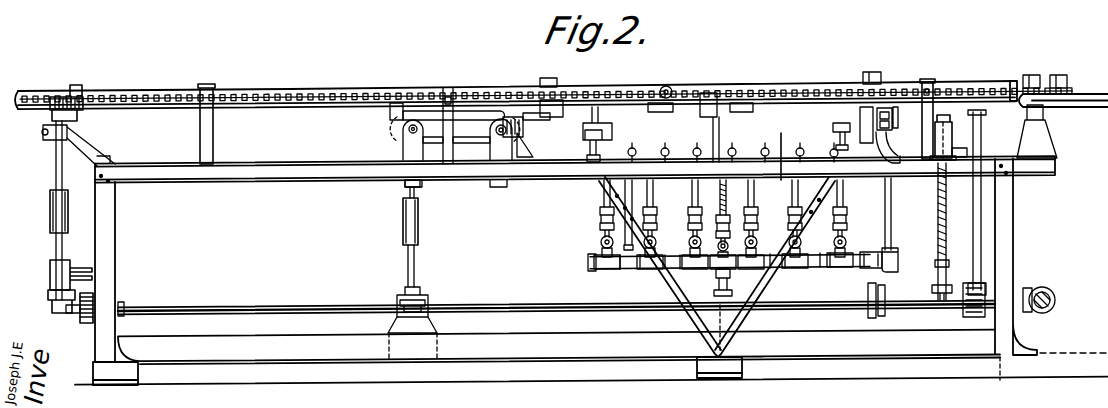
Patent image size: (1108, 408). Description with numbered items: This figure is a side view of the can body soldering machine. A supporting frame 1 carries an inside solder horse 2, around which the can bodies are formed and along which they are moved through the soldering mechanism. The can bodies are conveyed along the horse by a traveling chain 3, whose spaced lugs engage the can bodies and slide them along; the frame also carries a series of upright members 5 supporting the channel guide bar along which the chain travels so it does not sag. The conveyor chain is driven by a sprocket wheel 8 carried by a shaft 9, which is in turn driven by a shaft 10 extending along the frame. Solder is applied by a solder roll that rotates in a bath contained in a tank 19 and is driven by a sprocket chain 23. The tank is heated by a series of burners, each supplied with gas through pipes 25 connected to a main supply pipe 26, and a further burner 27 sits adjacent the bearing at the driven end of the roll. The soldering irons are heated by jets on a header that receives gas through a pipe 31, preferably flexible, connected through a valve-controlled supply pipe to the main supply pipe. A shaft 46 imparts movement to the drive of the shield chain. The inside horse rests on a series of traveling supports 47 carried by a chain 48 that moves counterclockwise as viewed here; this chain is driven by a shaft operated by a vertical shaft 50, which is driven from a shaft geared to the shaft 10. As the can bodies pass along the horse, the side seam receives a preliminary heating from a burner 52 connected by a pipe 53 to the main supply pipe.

The supporting frame 1 is at (250, 182).
The inside solder horse 2 is at (812, 98).
The traveling chain 3 is at (724, 92).
The upright members 5 is at (214, 131).
The sprocket wheel 8 is at (82, 113).
The shaft 9 is at (56, 176).
The shaft 10 is at (215, 306).
The tank 19 is at (775, 171).
The sprocket chain 23 is at (886, 112).
The pipes 25 is at (603, 195).
The main supply pipe 26 is at (797, 272).
The burner 27 is at (889, 194).
The pipe 31 is at (718, 192).
The shaft 46 is at (983, 215).
The traveling supports 47 is at (467, 160).
The chain 48 is at (432, 140).
The vertical shaft 50 is at (403, 253).
The burner 52 is at (984, 110).
The pipe 53 is at (950, 242).